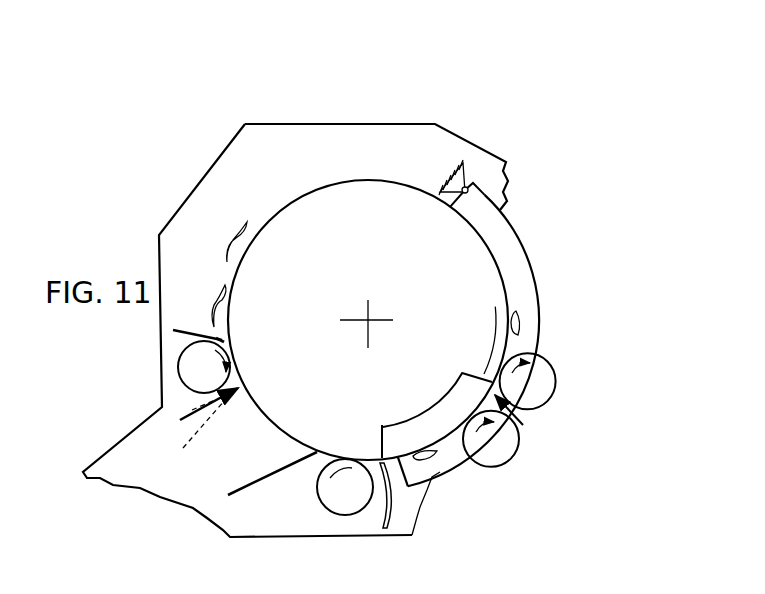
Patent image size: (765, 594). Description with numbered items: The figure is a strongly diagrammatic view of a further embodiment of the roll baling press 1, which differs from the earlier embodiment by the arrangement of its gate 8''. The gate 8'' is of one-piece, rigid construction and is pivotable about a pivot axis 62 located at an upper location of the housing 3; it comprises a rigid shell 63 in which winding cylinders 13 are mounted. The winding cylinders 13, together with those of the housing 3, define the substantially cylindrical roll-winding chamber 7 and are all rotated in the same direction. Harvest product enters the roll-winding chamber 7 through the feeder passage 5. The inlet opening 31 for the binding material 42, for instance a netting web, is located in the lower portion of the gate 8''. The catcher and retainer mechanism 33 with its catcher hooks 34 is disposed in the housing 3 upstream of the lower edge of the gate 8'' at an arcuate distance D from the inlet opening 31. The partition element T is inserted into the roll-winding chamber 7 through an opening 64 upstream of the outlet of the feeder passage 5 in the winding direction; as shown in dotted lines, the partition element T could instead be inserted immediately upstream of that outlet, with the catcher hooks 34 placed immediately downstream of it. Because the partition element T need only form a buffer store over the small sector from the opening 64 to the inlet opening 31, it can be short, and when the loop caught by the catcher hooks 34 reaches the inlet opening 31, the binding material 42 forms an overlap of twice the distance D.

The roll baling press 1 is at (293, 118).
The housing 3 is at (222, 152).
The feeder passage 5 is at (258, 436).
The roll-winding chamber 7 is at (382, 222).
The gate 8'' is at (516, 334).
The winding cylinders 13 is at (540, 385).
The inlet opening 31 is at (532, 418).
The catcher and retainer mechanism 33 is at (402, 518).
The catcher hooks 34 is at (390, 497).
The binding material 42 is at (523, 427).
The pivot axis 62 is at (480, 196).
The rigid shell 63 is at (525, 323).
The opening 64 is at (218, 332).
The arcuate distance D is at (437, 415).
The partition element T is at (185, 328).